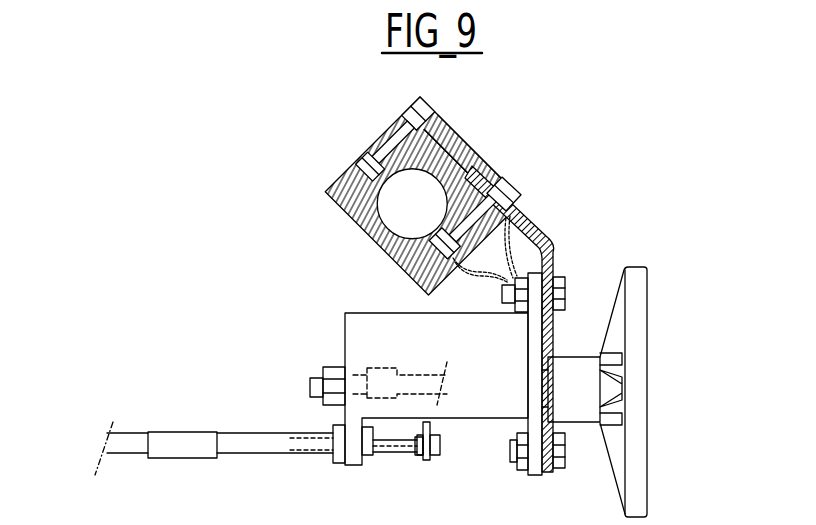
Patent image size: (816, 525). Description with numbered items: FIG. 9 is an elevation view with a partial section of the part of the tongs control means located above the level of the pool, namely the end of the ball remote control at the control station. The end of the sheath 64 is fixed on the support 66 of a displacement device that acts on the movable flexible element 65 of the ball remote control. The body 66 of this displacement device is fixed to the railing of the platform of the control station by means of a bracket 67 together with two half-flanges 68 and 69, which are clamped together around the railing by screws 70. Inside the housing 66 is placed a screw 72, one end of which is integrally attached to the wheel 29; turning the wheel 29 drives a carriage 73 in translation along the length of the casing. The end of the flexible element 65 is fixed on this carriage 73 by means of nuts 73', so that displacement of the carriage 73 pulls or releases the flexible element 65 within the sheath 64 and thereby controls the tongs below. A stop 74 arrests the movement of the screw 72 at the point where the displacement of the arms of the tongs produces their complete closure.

The wheel 29 is at (638, 455).
The sheath 64 is at (235, 445).
The movable flexible element 65 is at (393, 443).
The support 66 is at (497, 410).
The bracket 67 is at (540, 233).
The half-flange 68 is at (458, 160).
The half-flange 69 is at (363, 236).
The screws 70 is at (432, 106).
The screw 72 is at (352, 376).
The carriage 73 is at (454, 457).
The nuts 73' is at (433, 474).
The stop 74 is at (385, 367).